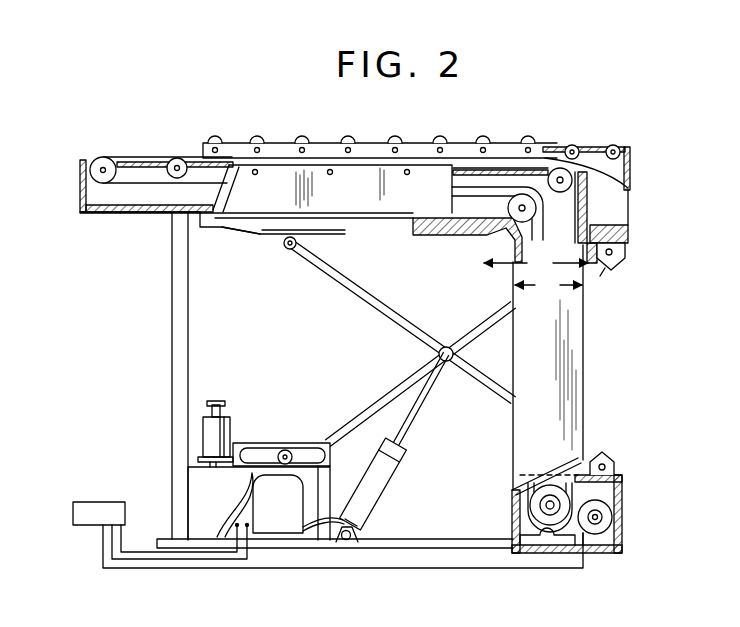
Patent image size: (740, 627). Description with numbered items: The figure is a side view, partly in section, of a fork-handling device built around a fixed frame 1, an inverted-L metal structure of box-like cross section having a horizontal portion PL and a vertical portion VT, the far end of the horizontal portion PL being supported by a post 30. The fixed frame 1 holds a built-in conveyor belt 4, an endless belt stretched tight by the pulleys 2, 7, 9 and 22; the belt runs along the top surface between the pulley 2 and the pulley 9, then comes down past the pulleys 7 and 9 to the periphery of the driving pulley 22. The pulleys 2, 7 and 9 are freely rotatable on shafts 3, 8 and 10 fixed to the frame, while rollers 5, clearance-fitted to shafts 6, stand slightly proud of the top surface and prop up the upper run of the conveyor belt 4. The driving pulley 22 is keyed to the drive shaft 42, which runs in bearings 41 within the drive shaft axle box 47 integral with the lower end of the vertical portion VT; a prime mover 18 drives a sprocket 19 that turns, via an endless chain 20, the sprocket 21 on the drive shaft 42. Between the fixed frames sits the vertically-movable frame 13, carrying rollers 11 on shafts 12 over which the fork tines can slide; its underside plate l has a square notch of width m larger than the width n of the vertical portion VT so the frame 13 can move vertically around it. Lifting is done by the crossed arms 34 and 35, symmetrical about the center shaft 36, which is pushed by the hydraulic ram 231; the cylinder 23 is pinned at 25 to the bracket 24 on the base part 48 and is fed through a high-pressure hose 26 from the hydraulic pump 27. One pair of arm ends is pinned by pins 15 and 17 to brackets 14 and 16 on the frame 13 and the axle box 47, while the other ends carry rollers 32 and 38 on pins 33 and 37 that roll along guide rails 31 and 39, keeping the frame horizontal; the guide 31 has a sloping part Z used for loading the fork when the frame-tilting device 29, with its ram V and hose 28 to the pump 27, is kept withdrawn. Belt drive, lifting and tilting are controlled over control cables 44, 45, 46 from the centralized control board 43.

The fixed frame 1 is at (80, 185).
The pulley 2 is at (98, 164).
The shaft 3 is at (107, 166).
The conveyor belt 4 is at (140, 156).
The rollers 5 is at (171, 164).
The shafts 6 is at (179, 160).
The pulley 7 is at (472, 205).
The shaft 8 is at (536, 210).
The pulley 9 is at (554, 172).
The shaft 10 is at (566, 150).
The rollers 11 is at (259, 137).
The shafts 12 is at (630, 160).
The vertically-movable frame 13 is at (629, 200).
The bracket 14 is at (625, 255).
The pin 15 is at (609, 262).
The bracket 16 is at (586, 457).
The pin 17 is at (608, 460).
The prime mover 18 is at (613, 510).
The sprocket 19 is at (615, 525).
The endless chain 20 is at (563, 548).
The sprocket 21 is at (530, 490).
The driving pulley 22 is at (552, 487).
The hydraulic cylinder 23 is at (392, 495).
The bracket 24 is at (358, 534).
The pin 25 is at (347, 547).
The high-pressure hose 26 is at (303, 515).
The hydraulic pump 27 is at (265, 530).
The high-pressure hose 28 is at (233, 513).
The vertically-movable frame-tilting device 29 is at (202, 433).
The post 30 is at (172, 330).
The guide rail 31 is at (268, 238).
The roller 32 is at (300, 242).
The pin 33 is at (290, 250).
The crossed arm 34 is at (398, 322).
The crossed arm 35 is at (487, 320).
The center shaft 36 is at (447, 362).
The pin 37 is at (290, 453).
The roller 38 is at (277, 448).
The guide rail 39 is at (250, 443).
The bearings 41 is at (540, 521).
The drive shaft 42 is at (548, 505).
The centralized control board 43 is at (97, 502).
The control cable 44 is at (110, 569).
The control cable 45 is at (165, 560).
The control cable 46 is at (210, 553).
The drive shaft axle box 47 is at (622, 483).
The base part 48 is at (441, 549).
The hydraulic ram 231 is at (421, 415).
The horizontal portion PL is at (372, 170).
The ram V is at (206, 412).
The sloping part Z is at (227, 232).
The vertical portion VT is at (585, 350).
The plate l is at (629, 233).
The width of notch m is at (536, 262).
The width of upright portion n is at (548, 284).